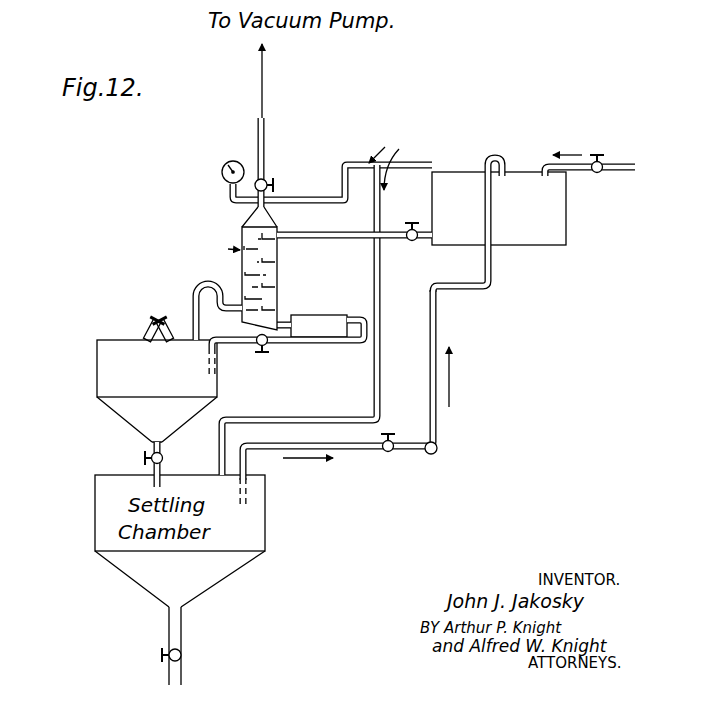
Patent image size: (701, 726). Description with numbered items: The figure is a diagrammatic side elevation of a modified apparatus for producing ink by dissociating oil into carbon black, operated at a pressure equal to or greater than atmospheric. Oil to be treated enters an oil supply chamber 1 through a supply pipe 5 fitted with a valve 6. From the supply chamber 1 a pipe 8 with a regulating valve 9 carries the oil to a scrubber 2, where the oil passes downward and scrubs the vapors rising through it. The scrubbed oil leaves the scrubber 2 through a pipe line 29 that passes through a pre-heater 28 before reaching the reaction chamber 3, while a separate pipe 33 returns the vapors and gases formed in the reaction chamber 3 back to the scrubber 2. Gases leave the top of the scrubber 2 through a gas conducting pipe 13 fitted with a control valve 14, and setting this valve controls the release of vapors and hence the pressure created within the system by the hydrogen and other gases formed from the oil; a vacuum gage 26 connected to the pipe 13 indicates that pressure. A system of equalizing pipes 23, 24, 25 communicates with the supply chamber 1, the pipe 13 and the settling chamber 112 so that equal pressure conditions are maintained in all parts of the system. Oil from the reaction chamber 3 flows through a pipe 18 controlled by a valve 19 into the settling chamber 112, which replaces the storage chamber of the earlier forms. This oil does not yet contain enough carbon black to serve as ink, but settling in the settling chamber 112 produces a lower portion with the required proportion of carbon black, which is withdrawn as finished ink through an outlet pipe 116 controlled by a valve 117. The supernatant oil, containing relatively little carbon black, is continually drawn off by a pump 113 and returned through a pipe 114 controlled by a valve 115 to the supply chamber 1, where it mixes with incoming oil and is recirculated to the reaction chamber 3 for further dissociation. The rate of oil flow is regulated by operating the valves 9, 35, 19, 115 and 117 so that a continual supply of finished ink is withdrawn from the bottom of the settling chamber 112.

The oil supply chamber 1 is at (557, 231).
The scrubber 2 is at (279, 285).
The reaction chamber 3 is at (97, 352).
The supply pipe 5 is at (582, 171).
The valve 6 is at (601, 161).
The pipe 8 is at (320, 239).
The regulating valve 9 is at (412, 242).
The gas conducting pipe 13 is at (265, 160).
The control valve 14 is at (268, 190).
The pipe 18 is at (150, 469).
The valve 19 is at (163, 459).
The equalizing pipe 23 is at (426, 168).
The equalizing pipe 24 is at (307, 205).
The equalizing pipe 25 is at (379, 322).
The vacuum gage 26 is at (221, 171).
The pre-heater 28 is at (318, 314).
The pipe line 29 is at (330, 349).
The pipe 33 is at (199, 291).
The valve 35 is at (268, 349).
The settling chamber 112 is at (250, 502).
The pump 113 is at (426, 458).
The pipe 114 is at (429, 369).
The valve 115 is at (385, 455).
The outlet pipe 116 is at (172, 627).
The valve 117 is at (182, 650).